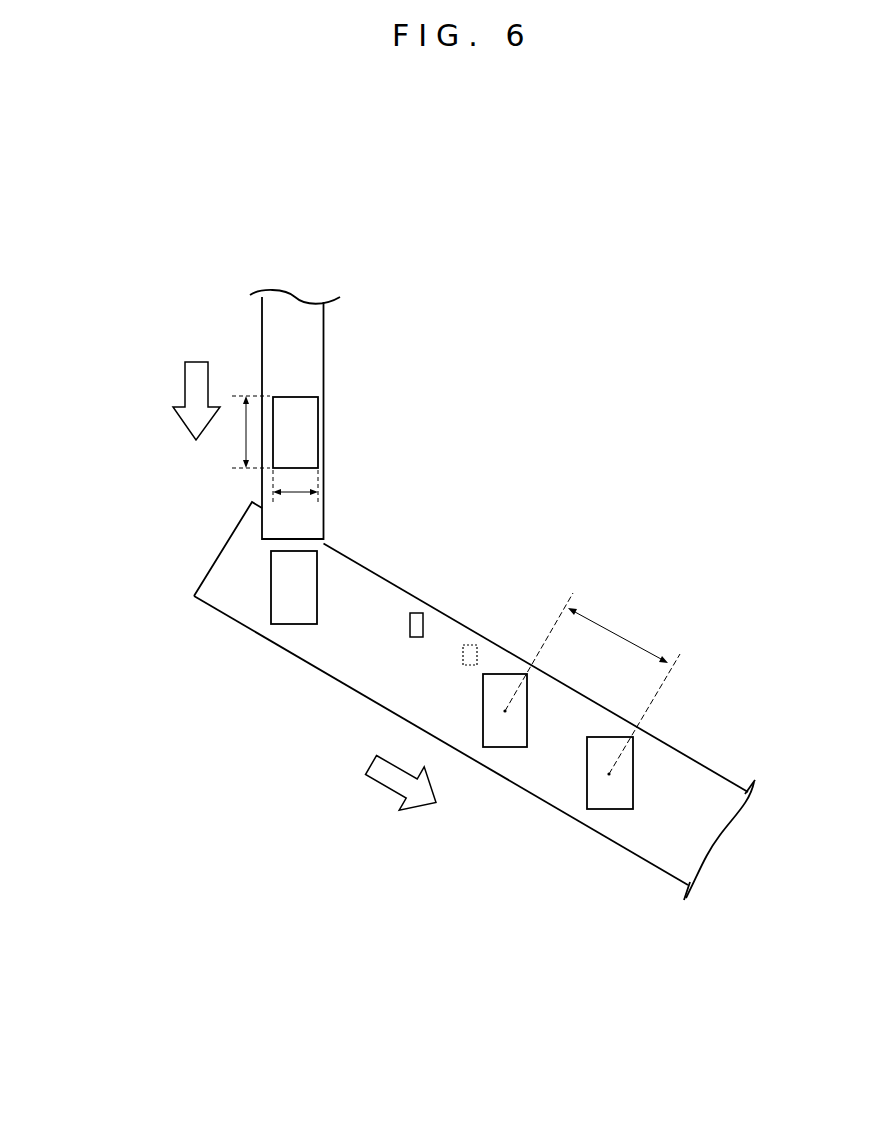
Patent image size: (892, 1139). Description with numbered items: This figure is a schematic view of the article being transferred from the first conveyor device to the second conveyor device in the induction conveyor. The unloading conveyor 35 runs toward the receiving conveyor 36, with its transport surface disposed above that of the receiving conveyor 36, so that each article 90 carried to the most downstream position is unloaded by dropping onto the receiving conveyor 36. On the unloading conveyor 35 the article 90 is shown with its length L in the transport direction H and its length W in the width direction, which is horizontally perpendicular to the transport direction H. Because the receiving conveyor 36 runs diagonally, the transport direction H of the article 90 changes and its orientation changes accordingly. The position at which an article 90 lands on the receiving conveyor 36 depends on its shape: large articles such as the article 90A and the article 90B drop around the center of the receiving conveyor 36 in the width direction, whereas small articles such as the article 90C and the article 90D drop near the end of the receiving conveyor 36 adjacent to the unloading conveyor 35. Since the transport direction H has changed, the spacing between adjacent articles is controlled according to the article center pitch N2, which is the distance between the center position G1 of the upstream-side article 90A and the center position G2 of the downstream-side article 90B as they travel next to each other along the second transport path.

The unloading conveyor 35 is at (317, 369).
The receiving conveyor 36 is at (340, 660).
The article 90 is at (307, 425).
The article on the upstream side 90A is at (515, 737).
The article on the downstream side 90B is at (627, 793).
The small-sized article 90C is at (477, 654).
The small-sized article 90D is at (420, 622).
The center position of the upstream-side article G1 is at (505, 711).
The center position of the downstream-side article G2 is at (609, 774).
The article center pitch N2 is at (592, 683).
The length of the article in the transport direction L is at (248, 432).
The length of the article in the width direction W is at (295, 494).
The transport direction H is at (200, 395).